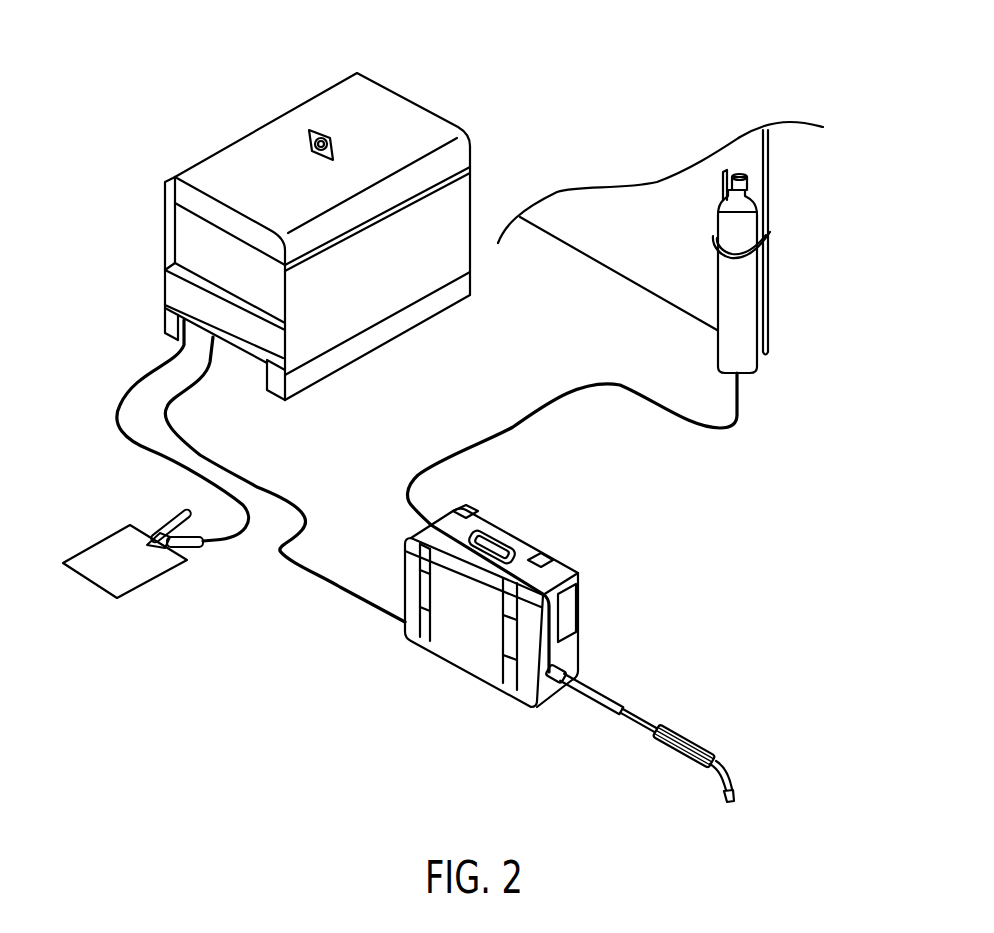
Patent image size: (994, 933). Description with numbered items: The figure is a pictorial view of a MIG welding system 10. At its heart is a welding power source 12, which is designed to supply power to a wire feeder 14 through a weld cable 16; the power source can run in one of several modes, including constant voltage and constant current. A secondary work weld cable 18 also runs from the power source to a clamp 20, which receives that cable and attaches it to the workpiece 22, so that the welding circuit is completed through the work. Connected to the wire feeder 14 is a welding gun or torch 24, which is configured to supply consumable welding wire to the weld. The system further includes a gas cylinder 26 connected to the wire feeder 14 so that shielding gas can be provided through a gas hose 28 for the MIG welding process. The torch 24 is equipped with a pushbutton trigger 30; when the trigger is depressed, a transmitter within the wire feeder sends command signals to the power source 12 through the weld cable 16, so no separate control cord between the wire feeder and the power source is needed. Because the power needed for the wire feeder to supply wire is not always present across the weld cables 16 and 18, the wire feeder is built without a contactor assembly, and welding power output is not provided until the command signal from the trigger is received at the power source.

The MIG welding system 10 is at (551, 88).
The welding power source 12 is at (260, 125).
The wire feeder 14 is at (465, 670).
The weld cable 16 is at (168, 407).
The secondary work weld cable 18 is at (143, 383).
The clamp 20 is at (187, 547).
The workpiece 22 is at (87, 583).
The welding gun or torch 24 is at (693, 733).
The gas cylinder 26 is at (727, 235).
The gas hose 28 is at (723, 430).
The pushbutton trigger 30 is at (677, 757).